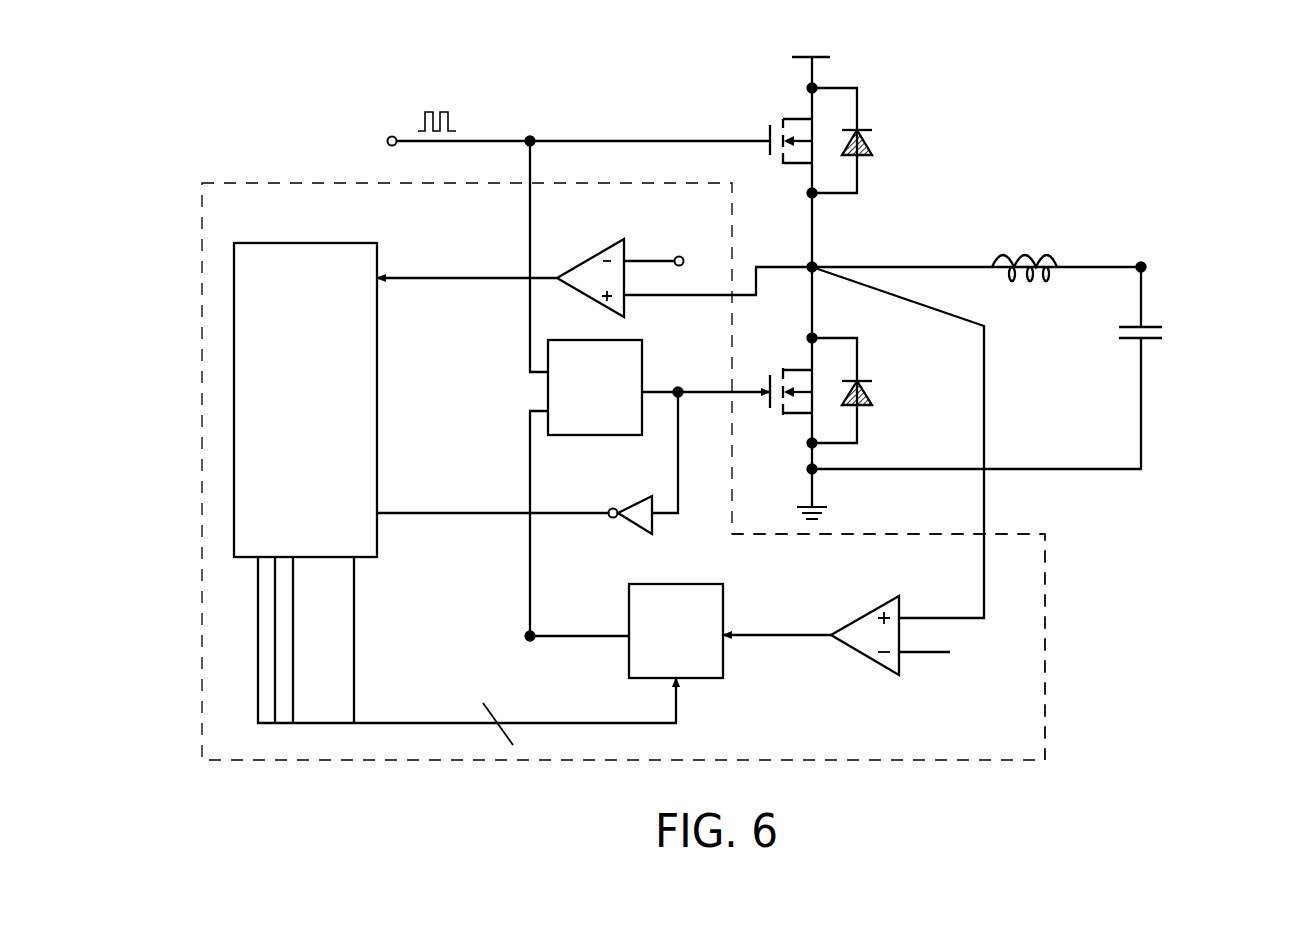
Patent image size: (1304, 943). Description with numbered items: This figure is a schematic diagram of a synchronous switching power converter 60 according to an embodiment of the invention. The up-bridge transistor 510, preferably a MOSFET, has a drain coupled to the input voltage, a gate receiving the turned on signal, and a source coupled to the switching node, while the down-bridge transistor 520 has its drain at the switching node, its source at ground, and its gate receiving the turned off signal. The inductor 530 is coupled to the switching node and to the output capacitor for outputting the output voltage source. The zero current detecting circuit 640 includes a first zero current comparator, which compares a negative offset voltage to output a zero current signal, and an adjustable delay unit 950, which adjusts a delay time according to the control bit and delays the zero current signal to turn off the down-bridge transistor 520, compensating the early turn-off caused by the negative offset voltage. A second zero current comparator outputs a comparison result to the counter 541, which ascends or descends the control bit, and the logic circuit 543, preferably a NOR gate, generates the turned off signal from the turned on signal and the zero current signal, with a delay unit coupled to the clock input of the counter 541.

The synchronous switching power converter 60 is at (1170, 125).
The up-bridge transistor 510 is at (876, 139).
The down-bridge transistor 520 is at (876, 389).
The inductor 530 is at (1022, 252).
The counter 541 is at (290, 242).
The logic circuit 543 is at (596, 437).
The adjustable delay unit 950 is at (724, 652).
The zero current detecting circuit 640 is at (1046, 653).